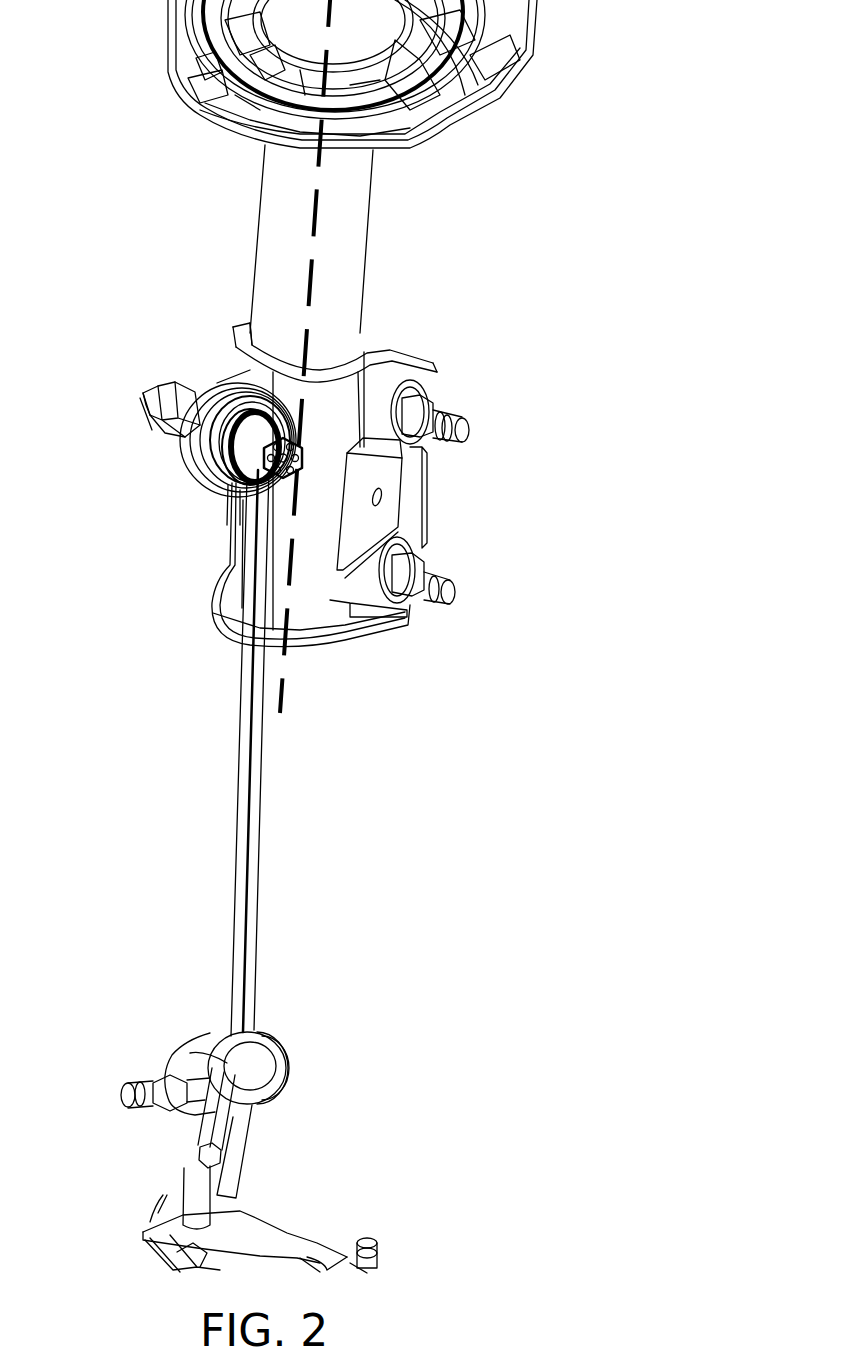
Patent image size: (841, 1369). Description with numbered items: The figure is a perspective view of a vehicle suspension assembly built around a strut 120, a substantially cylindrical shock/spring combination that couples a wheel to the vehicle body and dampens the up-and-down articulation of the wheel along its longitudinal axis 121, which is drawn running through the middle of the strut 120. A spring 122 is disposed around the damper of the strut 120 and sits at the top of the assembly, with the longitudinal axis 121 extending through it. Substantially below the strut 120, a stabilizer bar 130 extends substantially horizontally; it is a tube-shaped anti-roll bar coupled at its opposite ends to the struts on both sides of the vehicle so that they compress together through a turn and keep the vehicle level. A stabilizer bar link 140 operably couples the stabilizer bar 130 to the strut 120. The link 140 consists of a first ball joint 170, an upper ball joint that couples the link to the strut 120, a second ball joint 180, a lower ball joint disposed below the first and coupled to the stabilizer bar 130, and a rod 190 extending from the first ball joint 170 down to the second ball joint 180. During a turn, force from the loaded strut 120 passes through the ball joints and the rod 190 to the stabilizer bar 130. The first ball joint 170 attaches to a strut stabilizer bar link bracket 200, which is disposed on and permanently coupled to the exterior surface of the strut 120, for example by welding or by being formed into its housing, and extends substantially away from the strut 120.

The strut 120 is at (343, 292).
The longitudinal axis 121 is at (285, 692).
The spring 122 is at (423, 47).
The stabilizer bar 130 is at (277, 1253).
The stabilizer bar link 140 is at (210, 789).
The first ball joint 170 is at (248, 450).
The second ball joint 180 is at (250, 1060).
The rod 190 is at (245, 697).
The strut stabilizer bar link bracket 200 is at (232, 385).